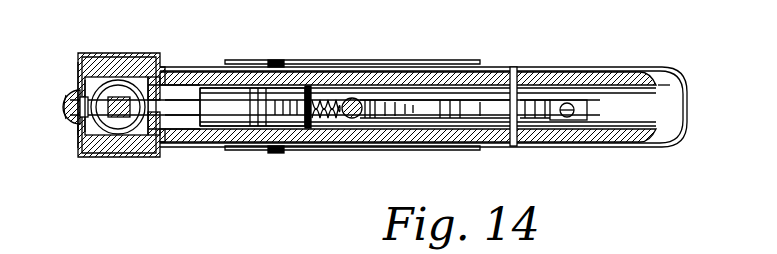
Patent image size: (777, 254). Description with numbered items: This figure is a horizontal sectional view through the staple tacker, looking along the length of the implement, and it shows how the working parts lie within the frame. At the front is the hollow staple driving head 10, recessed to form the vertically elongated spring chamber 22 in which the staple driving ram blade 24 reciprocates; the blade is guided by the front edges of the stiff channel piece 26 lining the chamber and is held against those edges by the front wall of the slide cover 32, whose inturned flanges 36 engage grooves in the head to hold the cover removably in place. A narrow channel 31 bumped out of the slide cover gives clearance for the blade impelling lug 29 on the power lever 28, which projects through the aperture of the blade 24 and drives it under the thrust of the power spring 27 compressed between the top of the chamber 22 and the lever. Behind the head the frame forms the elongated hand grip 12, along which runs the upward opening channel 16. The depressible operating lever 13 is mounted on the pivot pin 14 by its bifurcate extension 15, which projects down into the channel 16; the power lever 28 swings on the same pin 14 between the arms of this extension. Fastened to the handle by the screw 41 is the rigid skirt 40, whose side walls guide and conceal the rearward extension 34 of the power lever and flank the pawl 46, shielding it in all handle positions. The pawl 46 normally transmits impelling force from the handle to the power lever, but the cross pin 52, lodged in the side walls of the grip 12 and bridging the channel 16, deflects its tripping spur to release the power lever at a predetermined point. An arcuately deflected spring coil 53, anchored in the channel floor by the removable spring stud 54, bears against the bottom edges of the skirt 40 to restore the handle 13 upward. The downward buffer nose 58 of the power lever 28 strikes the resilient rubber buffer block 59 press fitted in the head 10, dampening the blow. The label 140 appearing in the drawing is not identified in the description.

The staple driving head 10 is at (138, 68).
The hand grip 12 is at (615, 71).
The operating lever 13 is at (660, 95).
The pivot pin 14 is at (278, 60).
The bifurcate extension 15 is at (240, 72).
The channel 16 is at (215, 88).
The spring chamber 22 is at (115, 77).
The staple driving ram blade 24 is at (82, 125).
The channel piece 26 is at (130, 135).
The power spring 27 is at (152, 135).
The power lever 28 is at (205, 142).
The blade impelling lug 29 is at (68, 110).
The channel 31 is at (70, 96).
The slide cover 32 is at (80, 58).
The rearward extension 34 is at (335, 107).
The inturned flanges 36 is at (108, 56).
The skirt 40 is at (445, 100).
The screw 41 is at (588, 110).
The pawl 46 is at (562, 71).
The cross pin 52 is at (513, 70).
The spring coil 53 is at (345, 116).
The spring stud 54 is at (330, 120).
The buffer nose 58 is at (80, 136).
The buffer block 59 is at (175, 78).
The sleeve 140 is at (255, 107).